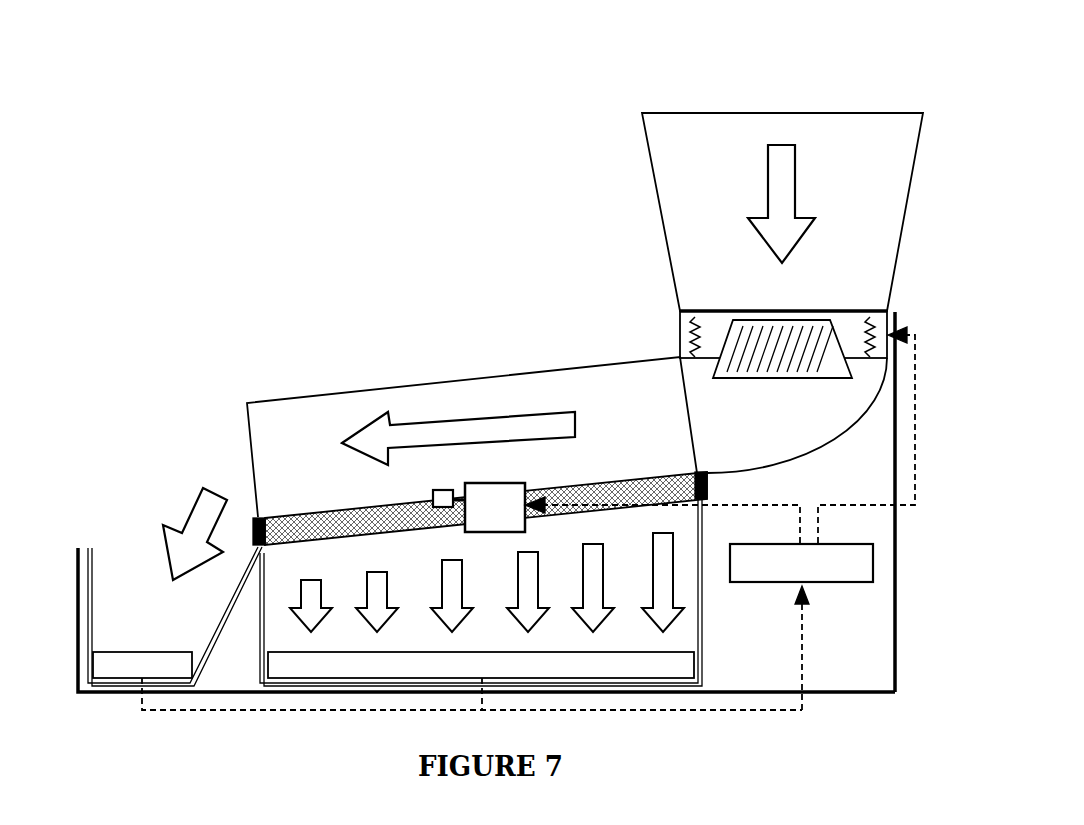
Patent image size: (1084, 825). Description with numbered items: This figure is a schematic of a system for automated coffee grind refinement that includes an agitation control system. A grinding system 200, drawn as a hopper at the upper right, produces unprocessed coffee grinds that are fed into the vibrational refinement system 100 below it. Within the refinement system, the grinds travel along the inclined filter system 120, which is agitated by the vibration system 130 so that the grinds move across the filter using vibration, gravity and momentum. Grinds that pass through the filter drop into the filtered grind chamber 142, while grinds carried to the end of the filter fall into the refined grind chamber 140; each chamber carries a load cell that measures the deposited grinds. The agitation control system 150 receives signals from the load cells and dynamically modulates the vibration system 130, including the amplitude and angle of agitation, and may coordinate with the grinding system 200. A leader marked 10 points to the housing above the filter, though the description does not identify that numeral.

The conveyor housing 10 is at (533, 430).
The vibrational refinement system 100 is at (486, 452).
The filter system 120 is at (480, 413).
The vibration system 130 is at (458, 391).
The refined grind chamber 140 is at (422, 594).
The filtered grind chamber 142 is at (540, 706).
The agitation control system 150 is at (742, 518).
The grinding system 200 is at (706, 358).